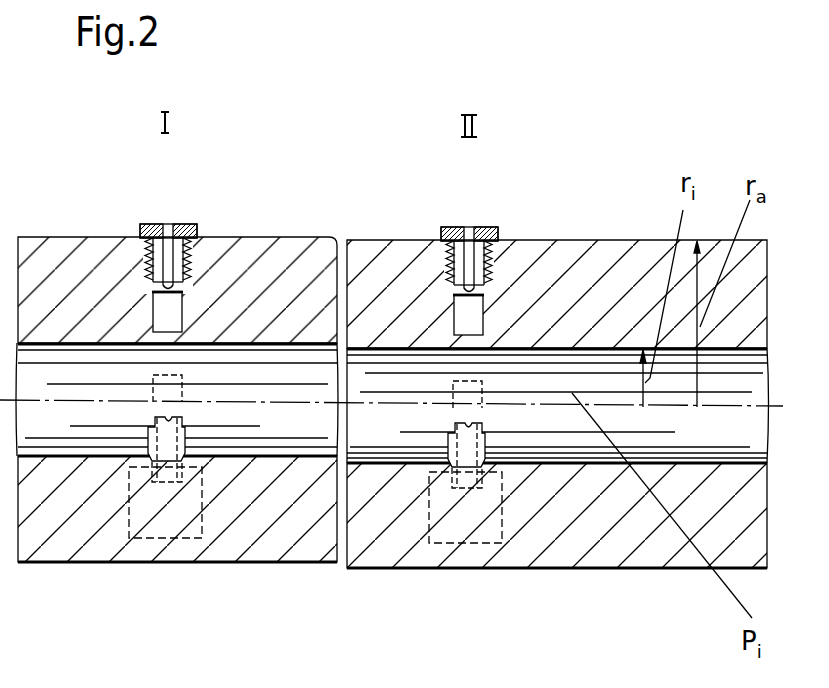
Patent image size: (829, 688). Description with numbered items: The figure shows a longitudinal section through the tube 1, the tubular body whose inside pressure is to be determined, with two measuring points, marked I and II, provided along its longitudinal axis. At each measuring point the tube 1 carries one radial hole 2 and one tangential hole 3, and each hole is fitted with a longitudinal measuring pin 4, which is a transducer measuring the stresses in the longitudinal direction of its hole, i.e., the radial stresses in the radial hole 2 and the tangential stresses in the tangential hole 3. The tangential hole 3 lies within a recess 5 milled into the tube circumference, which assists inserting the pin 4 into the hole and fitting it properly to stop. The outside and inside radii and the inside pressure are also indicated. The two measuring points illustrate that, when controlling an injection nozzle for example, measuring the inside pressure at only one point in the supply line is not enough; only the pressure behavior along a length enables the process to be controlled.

The tube 1 is at (262, 270).
The radial hole 2 is at (152, 306).
The tangential hole 3 is at (150, 412).
The longitudinal measuring pin 4 is at (170, 314).
The recess 5 is at (168, 518).